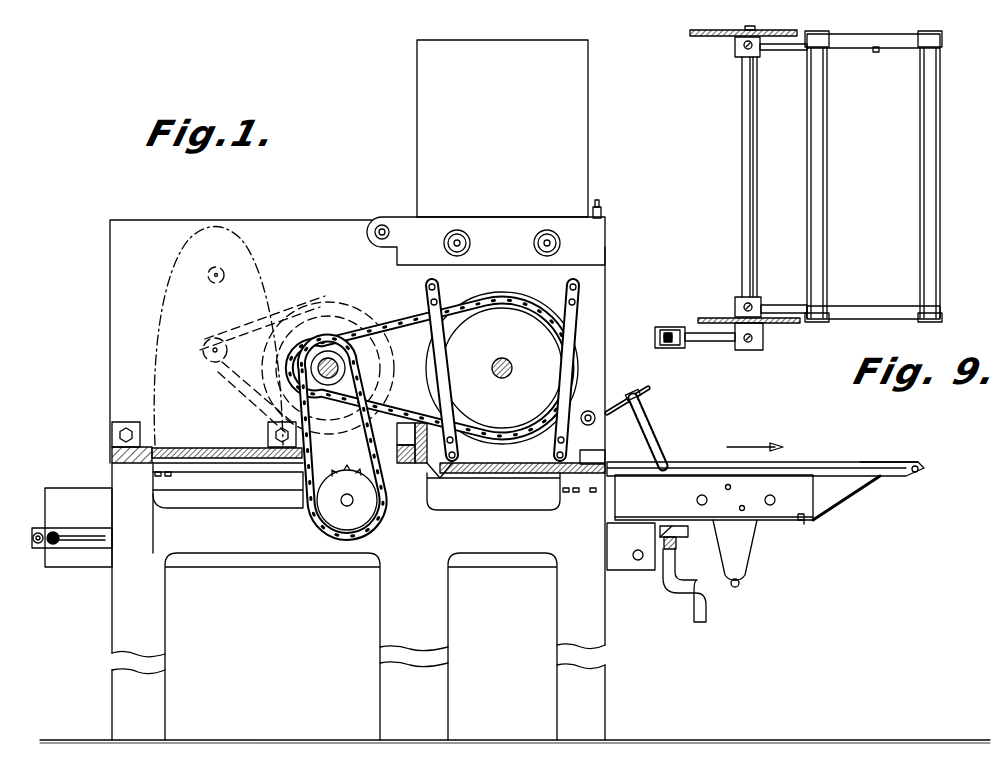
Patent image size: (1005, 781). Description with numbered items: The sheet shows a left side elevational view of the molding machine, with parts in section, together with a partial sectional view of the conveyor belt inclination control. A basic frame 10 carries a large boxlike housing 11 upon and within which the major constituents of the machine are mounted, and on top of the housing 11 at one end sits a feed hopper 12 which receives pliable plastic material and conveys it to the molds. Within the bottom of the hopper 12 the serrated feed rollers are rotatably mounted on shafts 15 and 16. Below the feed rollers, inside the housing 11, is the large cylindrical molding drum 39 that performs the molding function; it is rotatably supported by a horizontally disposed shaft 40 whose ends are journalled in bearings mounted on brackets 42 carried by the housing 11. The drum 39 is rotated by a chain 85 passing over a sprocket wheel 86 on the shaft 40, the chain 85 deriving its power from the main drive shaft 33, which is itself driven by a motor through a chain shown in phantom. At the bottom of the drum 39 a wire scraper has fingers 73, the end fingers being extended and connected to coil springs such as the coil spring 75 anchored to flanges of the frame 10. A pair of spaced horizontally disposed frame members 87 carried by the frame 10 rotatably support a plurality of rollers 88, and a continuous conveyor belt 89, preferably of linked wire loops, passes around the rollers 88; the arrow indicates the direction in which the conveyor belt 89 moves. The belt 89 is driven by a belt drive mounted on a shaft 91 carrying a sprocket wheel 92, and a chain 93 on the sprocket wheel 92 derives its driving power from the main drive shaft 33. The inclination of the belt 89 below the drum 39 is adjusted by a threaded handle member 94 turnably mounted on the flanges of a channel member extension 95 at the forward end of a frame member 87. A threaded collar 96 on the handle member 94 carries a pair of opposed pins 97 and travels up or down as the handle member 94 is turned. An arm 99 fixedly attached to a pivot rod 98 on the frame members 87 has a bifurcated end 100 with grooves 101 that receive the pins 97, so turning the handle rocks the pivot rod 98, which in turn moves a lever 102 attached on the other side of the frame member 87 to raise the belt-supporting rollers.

In FIG. 1, the basic frame 10 is at (112, 600).
In FIG. 1, the boxlike housing 11 is at (118, 262).
In FIG. 1, the feed hopper 12 is at (425, 95).
In FIG. 1, the shaft 15 is at (457, 240).
In FIG. 1, the shaft 16 is at (549, 222).
In FIG. 1, the main drive shaft 33 is at (348, 360).
In FIG. 1, the molding drum 39 is at (552, 306).
In FIG. 1, the shaft 40 is at (508, 364).
In FIG. 1, the brackets 42 is at (572, 312).
In FIG. 1, the fingers 73 is at (616, 400).
In FIG. 1, the coil spring 75 is at (655, 426).
In FIG. 1, the chain 85 is at (412, 324).
In FIG. 1, the sprocket wheel 86 is at (482, 318).
In FIG. 1, the frame members 87 is at (276, 567).
In FIG. 9, the frame members 87 is at (710, 38).
In FIG. 9, the rollers 88 is at (826, 166).
In FIG. 1, the conveyor belt 89 is at (698, 464).
In FIG. 1, the shaft 91 is at (343, 503).
In FIG. 1, the sprocket wheel 92 is at (360, 518).
In FIG. 1, the chain 93 is at (385, 522).
In FIG. 1, the threaded handle member 94 is at (700, 612).
In FIG. 9, the threaded handle member 94 is at (656, 339).
In FIG. 1, the channel member extension 95 is at (835, 494).
In FIG. 9, the threaded collar 96 is at (656, 332).
In FIG. 9, the pins 97 is at (668, 326).
In FIG. 9, the pivot rod 98 is at (742, 158).
In FIG. 9, the arm 99 is at (717, 343).
In FIG. 1, the bifurcated end 100 is at (668, 545).
In FIG. 9, the bifurcated end 100 is at (664, 332).
In FIG. 1, the grooves 101 is at (676, 533).
In FIG. 9, the lever 102 is at (779, 50).